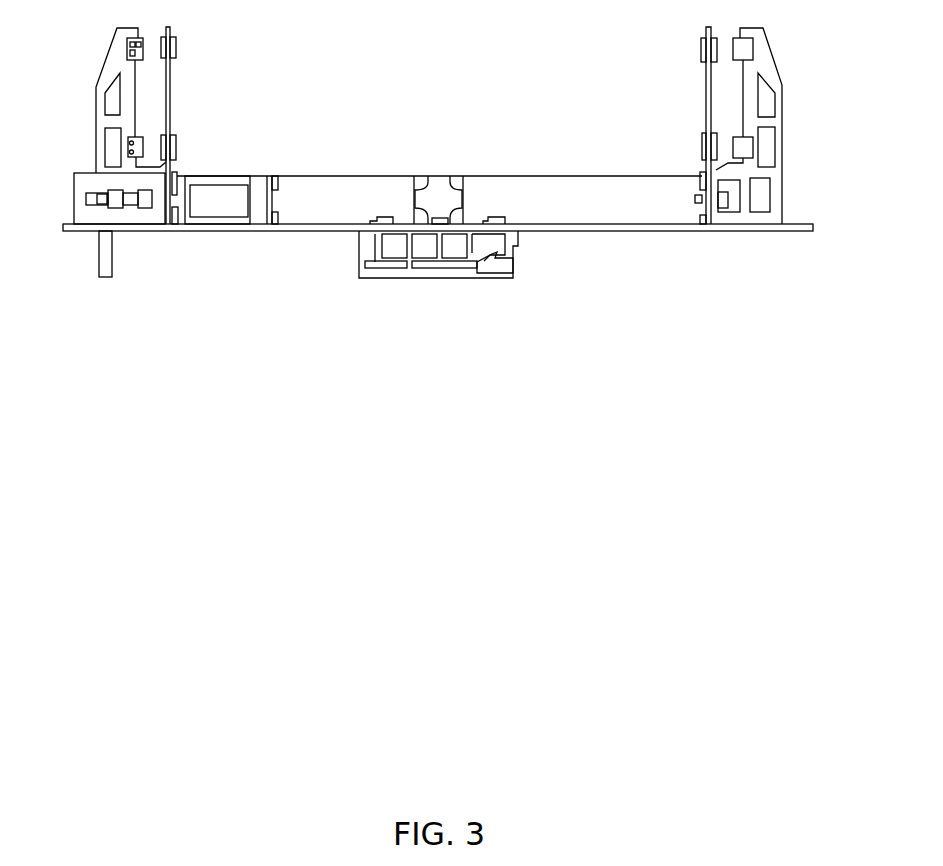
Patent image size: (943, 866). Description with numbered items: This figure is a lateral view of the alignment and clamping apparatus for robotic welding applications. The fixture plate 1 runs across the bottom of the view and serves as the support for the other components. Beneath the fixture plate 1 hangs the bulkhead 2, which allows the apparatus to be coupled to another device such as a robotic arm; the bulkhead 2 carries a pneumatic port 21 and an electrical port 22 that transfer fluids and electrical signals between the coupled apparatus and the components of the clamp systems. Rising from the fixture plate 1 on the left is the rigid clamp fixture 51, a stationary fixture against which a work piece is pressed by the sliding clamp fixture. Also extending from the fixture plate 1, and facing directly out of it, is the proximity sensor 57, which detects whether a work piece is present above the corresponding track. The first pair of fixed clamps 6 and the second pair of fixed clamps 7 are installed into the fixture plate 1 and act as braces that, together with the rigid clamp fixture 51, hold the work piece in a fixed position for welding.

The fixture plate 1 is at (824, 236).
The bulkhead 2 is at (445, 286).
The pneumatic port 21 is at (360, 243).
The electrical port 22 is at (527, 242).
The rigid clamp fixture 51 is at (108, 62).
The proximity sensor 57 is at (105, 256).
The first pair of fixed clamps 6 is at (778, 117).
The second pair of fixed clamps 7 is at (168, 88).